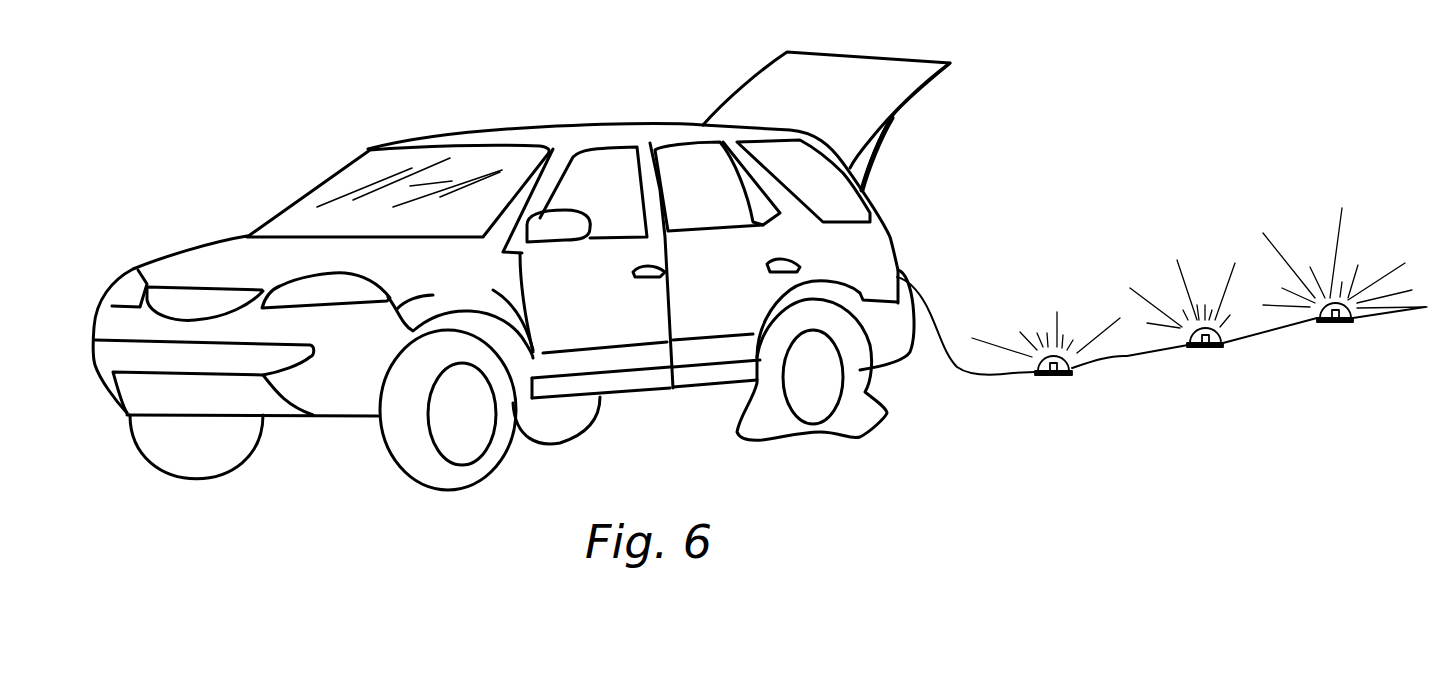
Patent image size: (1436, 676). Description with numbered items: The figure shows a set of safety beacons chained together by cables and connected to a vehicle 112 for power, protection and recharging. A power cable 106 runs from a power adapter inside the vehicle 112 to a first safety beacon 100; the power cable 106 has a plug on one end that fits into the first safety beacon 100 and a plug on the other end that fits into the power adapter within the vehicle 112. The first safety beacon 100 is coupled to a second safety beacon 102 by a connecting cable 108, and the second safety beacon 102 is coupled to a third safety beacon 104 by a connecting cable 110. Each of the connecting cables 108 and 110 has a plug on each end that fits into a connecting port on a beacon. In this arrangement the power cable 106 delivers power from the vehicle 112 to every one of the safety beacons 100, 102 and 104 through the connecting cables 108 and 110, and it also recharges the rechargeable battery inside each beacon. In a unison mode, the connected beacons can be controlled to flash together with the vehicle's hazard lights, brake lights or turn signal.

The first safety beacon 100 is at (1065, 377).
The second safety beacon 102 is at (1222, 347).
The third safety beacon 104 is at (1350, 322).
The power cable 106 is at (953, 373).
The connecting cable 108 is at (1127, 357).
The connecting cable 110 is at (1283, 325).
The vehicle 112 is at (542, 125).